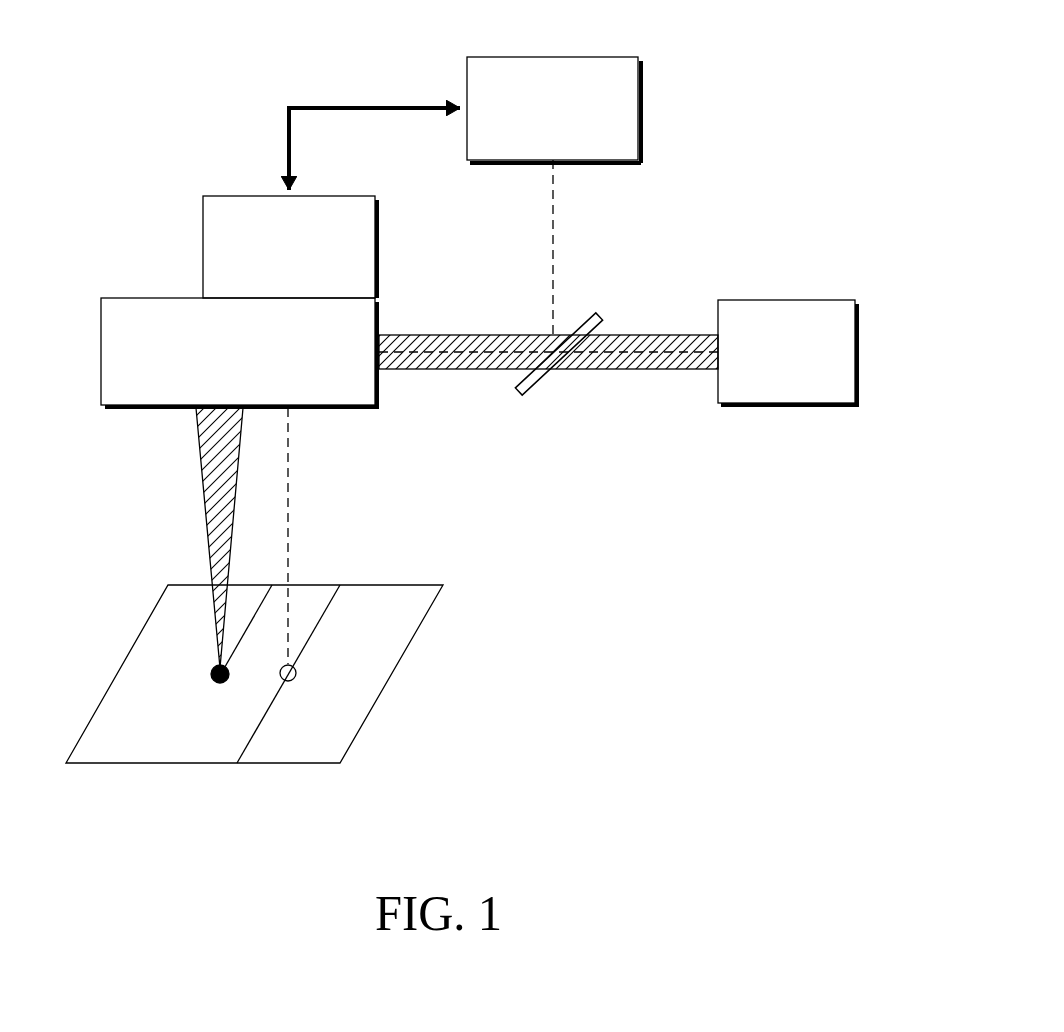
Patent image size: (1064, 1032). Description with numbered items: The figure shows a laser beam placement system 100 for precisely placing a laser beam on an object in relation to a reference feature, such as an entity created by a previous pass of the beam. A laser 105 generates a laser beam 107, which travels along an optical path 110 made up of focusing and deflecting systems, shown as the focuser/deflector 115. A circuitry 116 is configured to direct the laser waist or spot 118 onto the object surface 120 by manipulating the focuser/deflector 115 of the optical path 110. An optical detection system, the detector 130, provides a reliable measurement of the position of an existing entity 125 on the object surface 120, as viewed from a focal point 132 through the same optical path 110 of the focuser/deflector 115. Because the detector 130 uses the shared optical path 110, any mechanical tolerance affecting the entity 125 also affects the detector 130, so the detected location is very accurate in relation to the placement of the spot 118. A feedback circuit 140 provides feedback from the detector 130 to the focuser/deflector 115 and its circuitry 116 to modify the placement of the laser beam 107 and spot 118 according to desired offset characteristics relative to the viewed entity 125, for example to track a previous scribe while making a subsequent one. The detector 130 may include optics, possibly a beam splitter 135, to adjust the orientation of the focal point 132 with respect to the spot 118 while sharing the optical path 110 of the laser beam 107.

The laser beam placement system 100 is at (968, 85).
The laser 105 is at (802, 380).
The laser beam 107 is at (205, 528).
The optical path 110 is at (291, 505).
The focuser/deflector 115 is at (256, 392).
The circuitry 116 is at (305, 273).
The spot 118 is at (208, 673).
The object surface 120 is at (394, 707).
The entity 125 is at (259, 730).
The detector 130 is at (568, 136).
The focal point 132 is at (299, 670).
The beam splitter 135 is at (596, 320).
The feedback circuit 140 is at (337, 107).